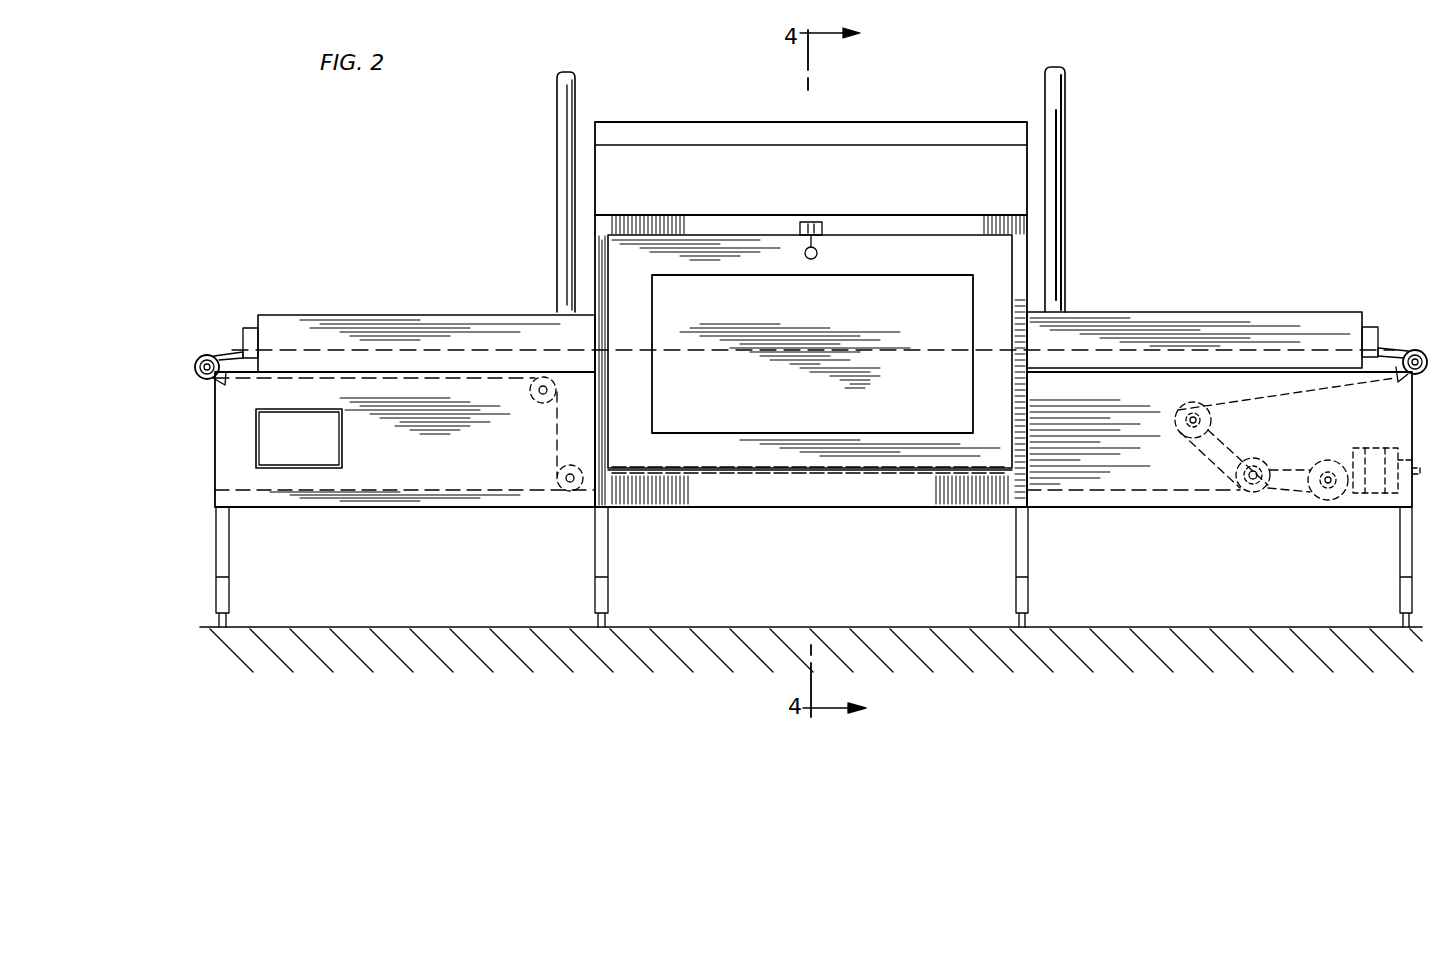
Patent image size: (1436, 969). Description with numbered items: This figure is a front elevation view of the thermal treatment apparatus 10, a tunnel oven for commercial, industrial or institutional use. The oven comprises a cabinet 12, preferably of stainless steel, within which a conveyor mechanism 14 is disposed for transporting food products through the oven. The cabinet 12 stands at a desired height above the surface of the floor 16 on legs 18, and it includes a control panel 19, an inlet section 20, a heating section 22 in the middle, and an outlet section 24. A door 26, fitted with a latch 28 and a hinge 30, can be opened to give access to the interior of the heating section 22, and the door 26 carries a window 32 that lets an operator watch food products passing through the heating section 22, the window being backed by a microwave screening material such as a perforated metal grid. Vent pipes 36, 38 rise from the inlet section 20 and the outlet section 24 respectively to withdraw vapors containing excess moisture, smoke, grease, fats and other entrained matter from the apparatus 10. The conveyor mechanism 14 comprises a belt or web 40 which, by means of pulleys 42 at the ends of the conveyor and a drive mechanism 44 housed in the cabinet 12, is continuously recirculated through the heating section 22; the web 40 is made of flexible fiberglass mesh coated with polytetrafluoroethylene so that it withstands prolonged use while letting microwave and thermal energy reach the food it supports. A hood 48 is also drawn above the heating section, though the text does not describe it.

The thermal treatment apparatus 10 is at (1226, 140).
The cabinet 12 is at (1270, 300).
The conveyor mechanism 14 is at (233, 335).
The floor 16 is at (886, 626).
The legs 18 is at (227, 558).
The control panel 19 is at (331, 432).
The inlet section 20 is at (440, 318).
The heating section 22 is at (935, 326).
The outlet section 24 is at (1140, 320).
The door 26 is at (614, 246).
The latch 28 is at (815, 242).
The hinge 30 is at (705, 476).
The window 32 is at (718, 285).
The vent pipe 36 is at (558, 150).
The vent pipe 38 is at (1065, 137).
The web 40 is at (360, 355).
The pulleys 42 is at (205, 335).
The drive mechanism 44 is at (1320, 452).
The hood 48 is at (713, 156).